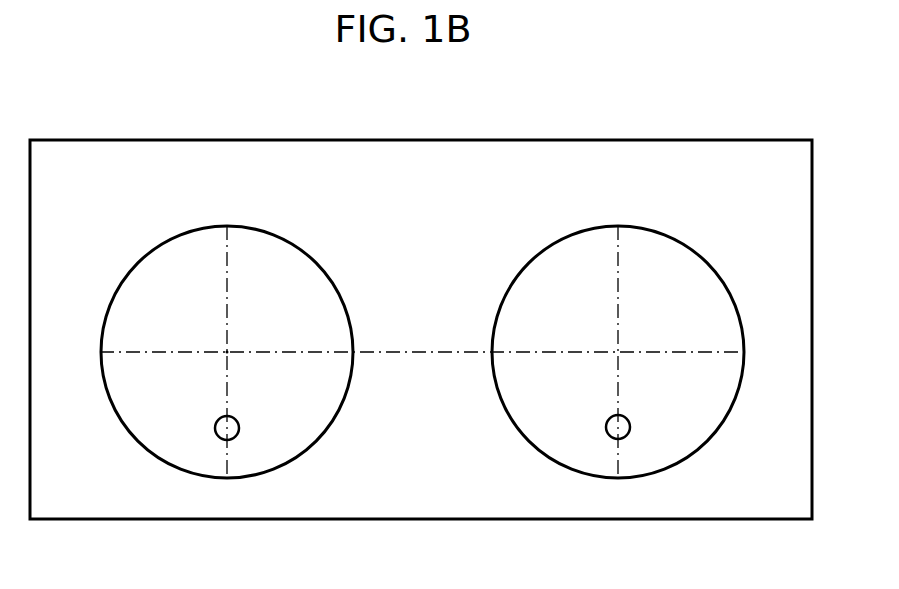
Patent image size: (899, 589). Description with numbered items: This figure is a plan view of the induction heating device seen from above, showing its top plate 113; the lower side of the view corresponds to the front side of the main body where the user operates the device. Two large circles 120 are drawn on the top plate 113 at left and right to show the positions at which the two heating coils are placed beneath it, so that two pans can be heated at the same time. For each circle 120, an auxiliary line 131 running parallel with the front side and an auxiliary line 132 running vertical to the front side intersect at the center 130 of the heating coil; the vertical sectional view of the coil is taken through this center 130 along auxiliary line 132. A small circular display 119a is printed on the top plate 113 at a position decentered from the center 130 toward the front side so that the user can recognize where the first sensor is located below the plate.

The top plate 113 is at (702, 140).
The large circle 120 is at (257, 228).
The auxiliary line 131 is at (148, 352).
The auxiliary line 132 is at (225, 460).
The center 130 is at (228, 353).
The circular display 119a is at (236, 437).